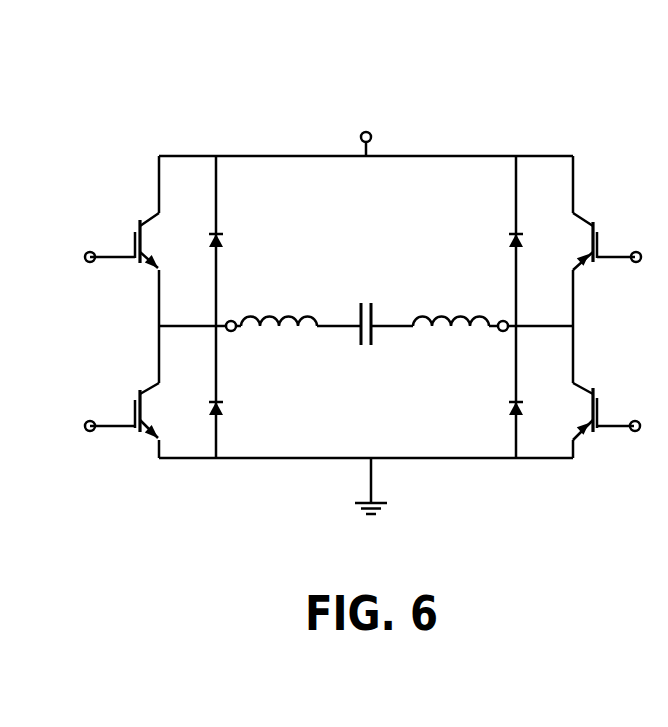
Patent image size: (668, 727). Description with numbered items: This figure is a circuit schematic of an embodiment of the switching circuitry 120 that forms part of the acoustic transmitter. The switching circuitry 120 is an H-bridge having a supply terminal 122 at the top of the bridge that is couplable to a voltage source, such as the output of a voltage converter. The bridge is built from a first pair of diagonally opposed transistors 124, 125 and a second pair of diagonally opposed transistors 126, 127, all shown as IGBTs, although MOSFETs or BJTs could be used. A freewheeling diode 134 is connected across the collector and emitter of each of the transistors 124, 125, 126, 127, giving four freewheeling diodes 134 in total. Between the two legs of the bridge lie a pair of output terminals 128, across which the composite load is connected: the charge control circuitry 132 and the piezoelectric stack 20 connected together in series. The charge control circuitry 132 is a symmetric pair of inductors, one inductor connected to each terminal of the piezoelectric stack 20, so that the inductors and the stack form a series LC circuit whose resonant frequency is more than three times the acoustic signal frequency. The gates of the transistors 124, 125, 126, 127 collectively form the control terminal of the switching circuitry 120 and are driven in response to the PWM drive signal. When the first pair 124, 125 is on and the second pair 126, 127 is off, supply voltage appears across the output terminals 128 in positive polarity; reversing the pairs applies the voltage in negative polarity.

The switching circuitry 120 is at (143, 53).
The supply terminal 122 is at (365, 131).
The transistor of first pair of diagonally opposed transistors 124 is at (133, 233).
The transistor of first pair of diagonally opposed transistors 125 is at (598, 405).
The transistor of second pair of diagonally opposed transistors 126 is at (598, 235).
The transistor of second pair of diagonally opposed transistors 127 is at (132, 405).
The output terminals 128 is at (232, 321).
The charge control circuitry 132 is at (282, 326).
The freewheeling diodes 134 is at (212, 243).
The piezoelectric stack 20 is at (372, 315).